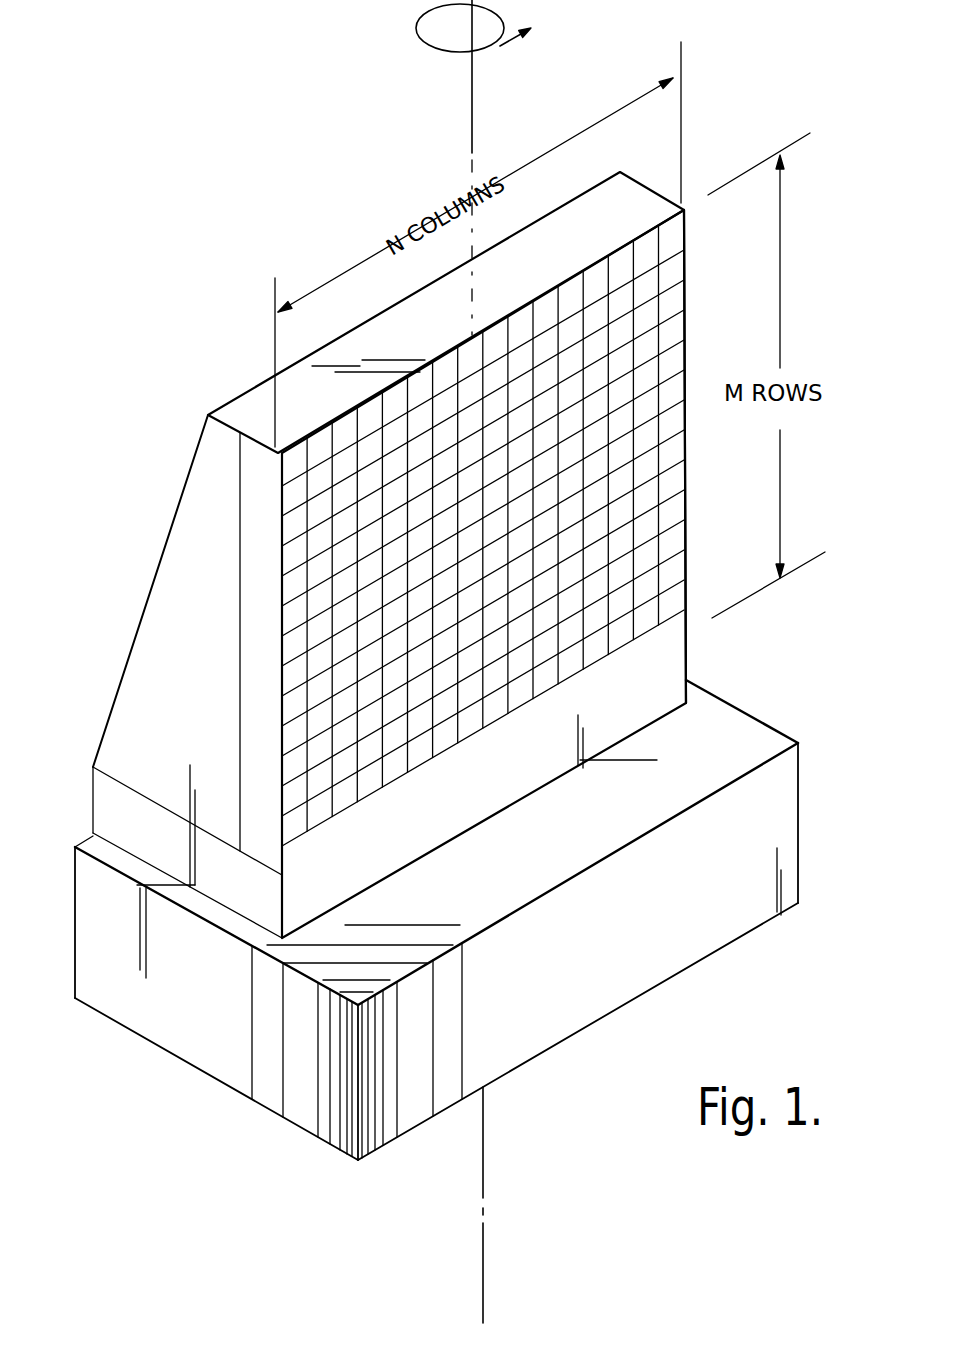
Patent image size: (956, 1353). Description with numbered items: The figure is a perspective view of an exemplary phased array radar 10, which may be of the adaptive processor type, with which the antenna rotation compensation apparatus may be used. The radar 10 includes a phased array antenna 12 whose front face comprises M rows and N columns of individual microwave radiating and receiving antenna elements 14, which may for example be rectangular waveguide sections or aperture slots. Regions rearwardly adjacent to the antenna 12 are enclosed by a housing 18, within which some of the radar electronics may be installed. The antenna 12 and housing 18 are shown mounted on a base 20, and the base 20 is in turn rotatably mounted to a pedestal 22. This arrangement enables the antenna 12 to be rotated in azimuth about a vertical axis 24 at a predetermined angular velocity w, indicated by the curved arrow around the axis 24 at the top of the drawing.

The phased array radar 10 is at (156, 396).
The phased array antenna 12 is at (272, 842).
The antenna elements 14 is at (293, 655).
The housing 18 is at (158, 560).
The base 20 is at (687, 667).
The pedestal 22 is at (787, 793).
The vertical axis 24 is at (474, 87).